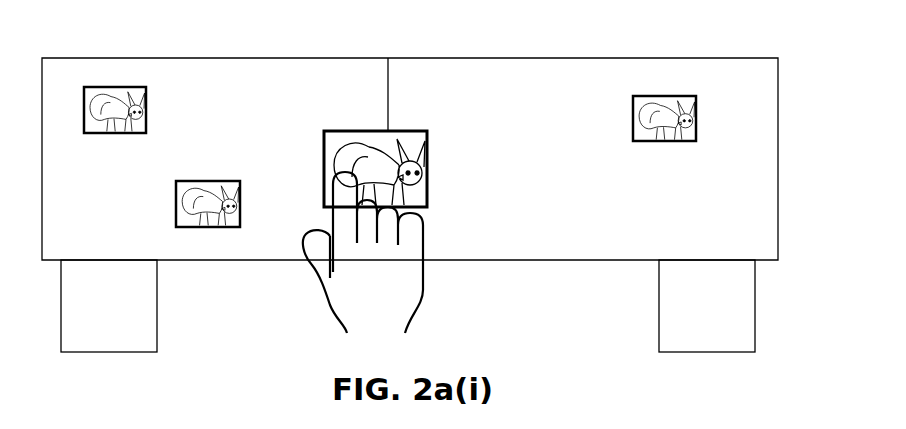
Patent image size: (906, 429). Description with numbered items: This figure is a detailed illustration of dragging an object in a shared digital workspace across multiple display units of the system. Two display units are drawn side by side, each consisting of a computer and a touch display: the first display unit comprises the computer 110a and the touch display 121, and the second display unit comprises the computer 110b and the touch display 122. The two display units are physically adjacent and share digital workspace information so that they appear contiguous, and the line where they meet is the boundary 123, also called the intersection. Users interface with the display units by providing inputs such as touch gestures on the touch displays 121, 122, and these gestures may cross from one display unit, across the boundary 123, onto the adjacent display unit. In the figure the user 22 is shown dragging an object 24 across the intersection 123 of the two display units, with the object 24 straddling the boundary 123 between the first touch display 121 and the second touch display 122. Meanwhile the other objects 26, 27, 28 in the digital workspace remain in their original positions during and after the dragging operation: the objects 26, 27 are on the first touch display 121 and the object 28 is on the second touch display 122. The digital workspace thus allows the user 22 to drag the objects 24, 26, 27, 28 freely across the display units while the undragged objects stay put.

The user 22 is at (403, 280).
The object 24 is at (363, 142).
The object 26 is at (110, 95).
The object 27 is at (230, 218).
The object 28 is at (660, 100).
The computer 110a is at (148, 292).
The computer 110b is at (670, 280).
The touch display 121 is at (255, 76).
The touch display 122 is at (537, 77).
The boundary 123 is at (388, 83).